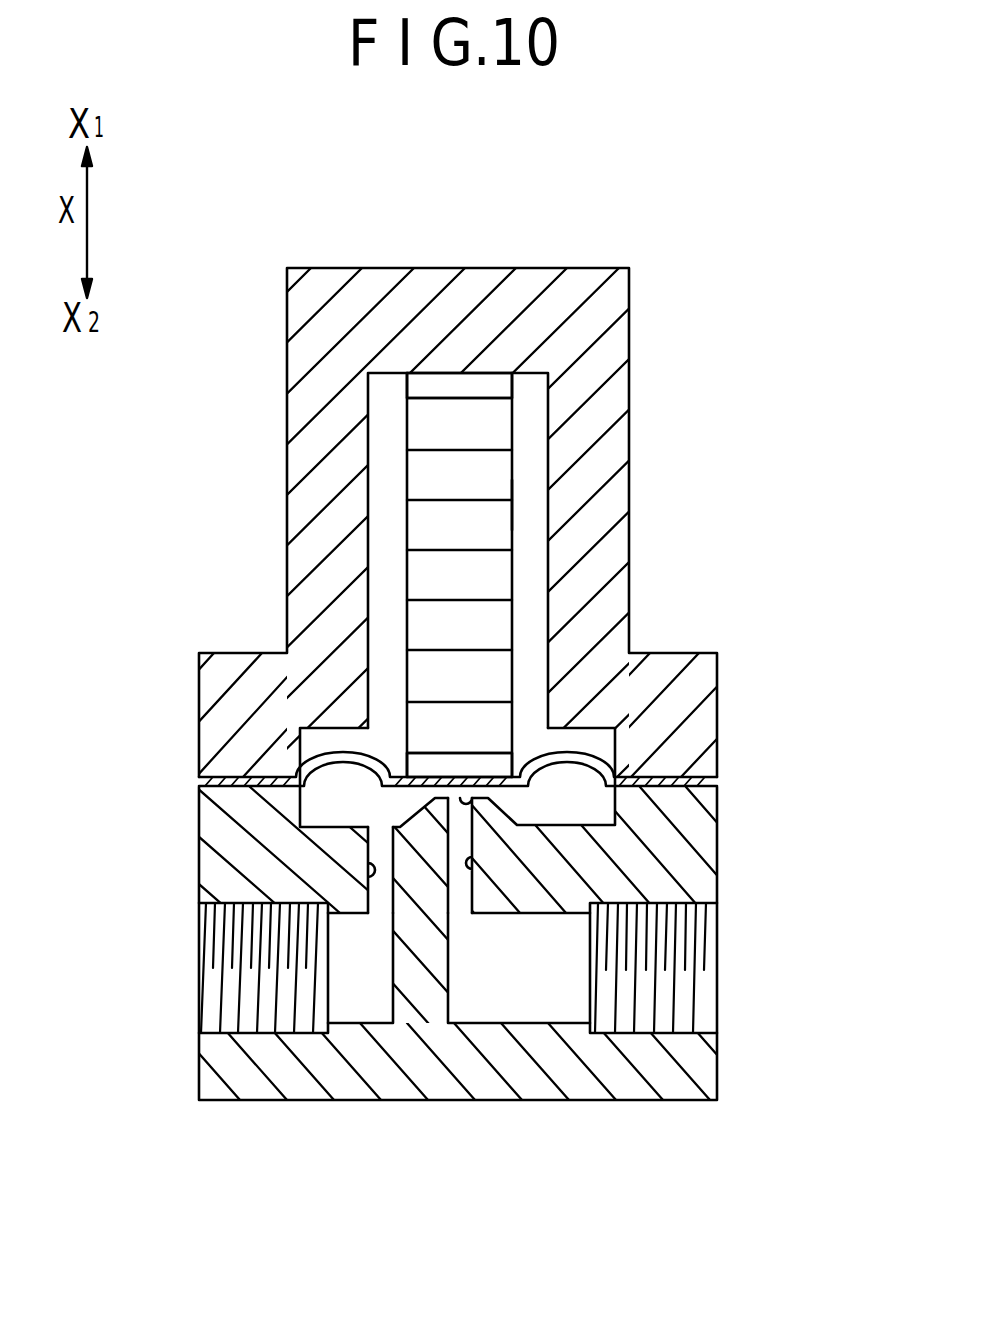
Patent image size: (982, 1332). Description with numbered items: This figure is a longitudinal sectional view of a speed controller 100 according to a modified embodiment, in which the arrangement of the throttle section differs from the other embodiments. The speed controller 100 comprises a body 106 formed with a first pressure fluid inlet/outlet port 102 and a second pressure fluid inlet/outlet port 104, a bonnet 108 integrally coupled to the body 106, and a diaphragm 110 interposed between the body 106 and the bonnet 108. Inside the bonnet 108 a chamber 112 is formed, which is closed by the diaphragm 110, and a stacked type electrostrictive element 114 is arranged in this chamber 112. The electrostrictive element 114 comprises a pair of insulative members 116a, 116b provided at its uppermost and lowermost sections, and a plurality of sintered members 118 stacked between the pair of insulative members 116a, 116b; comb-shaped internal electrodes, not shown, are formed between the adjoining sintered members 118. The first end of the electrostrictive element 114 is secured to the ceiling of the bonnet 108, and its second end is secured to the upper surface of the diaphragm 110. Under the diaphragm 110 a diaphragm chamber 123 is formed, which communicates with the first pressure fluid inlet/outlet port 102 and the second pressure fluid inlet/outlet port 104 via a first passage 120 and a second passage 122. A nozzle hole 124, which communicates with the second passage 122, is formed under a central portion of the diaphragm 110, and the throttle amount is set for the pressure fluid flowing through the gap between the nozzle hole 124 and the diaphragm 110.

The speed controller 100 is at (767, 150).
The first pressure fluid inlet/outlet port 102 is at (253, 1032).
The second pressure fluid inlet/outlet port 104 is at (660, 1030).
The body 106 is at (390, 1100).
The bonnet 108 is at (631, 354).
The diaphragm 110 is at (577, 757).
The chamber 112 is at (533, 549).
The stacked type electrostrictive element 114 is at (515, 508).
The insulative member 116a is at (447, 387).
The insulative member 116b is at (416, 766).
The sintered members 118 is at (423, 423).
The first passage 120 is at (367, 873).
The second passage 122 is at (473, 867).
The diaphragm chamber 123 is at (335, 799).
The nozzle hole 124 is at (478, 792).